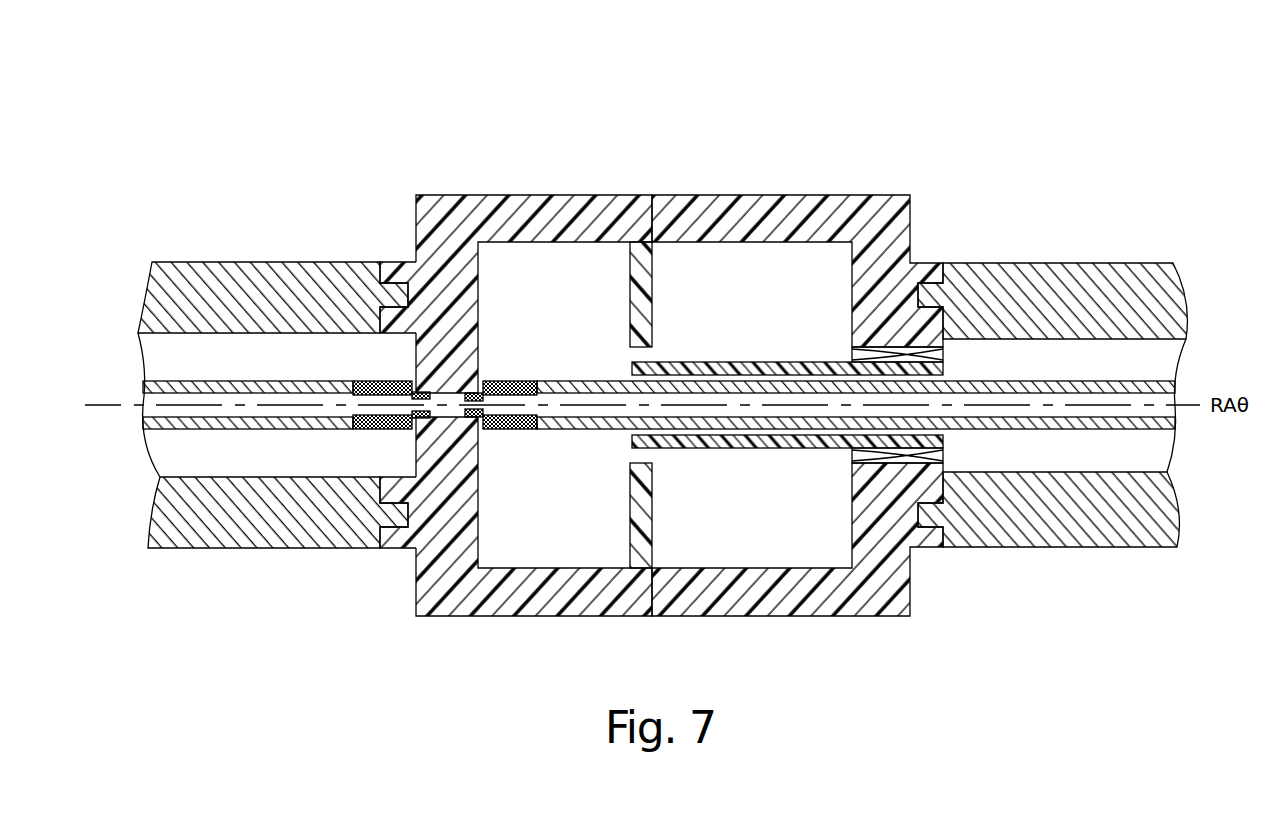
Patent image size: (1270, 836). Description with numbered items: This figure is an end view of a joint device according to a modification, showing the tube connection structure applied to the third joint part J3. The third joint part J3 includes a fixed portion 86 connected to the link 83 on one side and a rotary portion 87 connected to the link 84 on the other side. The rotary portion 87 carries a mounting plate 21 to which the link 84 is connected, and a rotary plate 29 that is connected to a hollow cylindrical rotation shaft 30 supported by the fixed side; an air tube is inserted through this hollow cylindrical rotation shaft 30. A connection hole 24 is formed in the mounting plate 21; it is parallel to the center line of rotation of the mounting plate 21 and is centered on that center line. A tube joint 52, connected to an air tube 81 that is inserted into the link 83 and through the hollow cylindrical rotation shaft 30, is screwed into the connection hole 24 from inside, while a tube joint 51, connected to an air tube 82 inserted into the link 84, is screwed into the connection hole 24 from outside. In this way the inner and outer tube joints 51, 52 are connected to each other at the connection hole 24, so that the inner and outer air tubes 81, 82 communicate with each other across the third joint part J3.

The mounting plate 21 is at (412, 253).
The connection hole 24 is at (487, 407).
The rotary plate 29 is at (630, 258).
The hollow cylindrical rotation shaft 30 is at (737, 362).
The tube joint 51 is at (392, 380).
The tube joint 52 is at (505, 380).
The air tube 81 is at (565, 380).
The air tube 82 is at (190, 380).
The link 83 is at (1050, 262).
The link 84 is at (228, 262).
The fixed portion 86 is at (843, 168).
The rotary portion 87 is at (495, 339).
The third joint part J3 is at (685, 123).